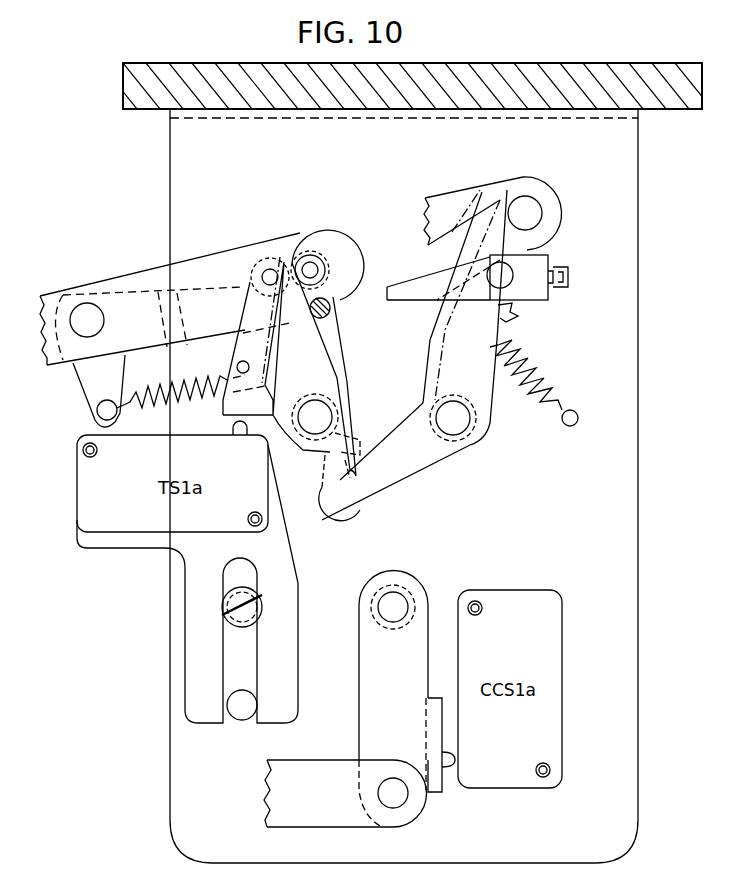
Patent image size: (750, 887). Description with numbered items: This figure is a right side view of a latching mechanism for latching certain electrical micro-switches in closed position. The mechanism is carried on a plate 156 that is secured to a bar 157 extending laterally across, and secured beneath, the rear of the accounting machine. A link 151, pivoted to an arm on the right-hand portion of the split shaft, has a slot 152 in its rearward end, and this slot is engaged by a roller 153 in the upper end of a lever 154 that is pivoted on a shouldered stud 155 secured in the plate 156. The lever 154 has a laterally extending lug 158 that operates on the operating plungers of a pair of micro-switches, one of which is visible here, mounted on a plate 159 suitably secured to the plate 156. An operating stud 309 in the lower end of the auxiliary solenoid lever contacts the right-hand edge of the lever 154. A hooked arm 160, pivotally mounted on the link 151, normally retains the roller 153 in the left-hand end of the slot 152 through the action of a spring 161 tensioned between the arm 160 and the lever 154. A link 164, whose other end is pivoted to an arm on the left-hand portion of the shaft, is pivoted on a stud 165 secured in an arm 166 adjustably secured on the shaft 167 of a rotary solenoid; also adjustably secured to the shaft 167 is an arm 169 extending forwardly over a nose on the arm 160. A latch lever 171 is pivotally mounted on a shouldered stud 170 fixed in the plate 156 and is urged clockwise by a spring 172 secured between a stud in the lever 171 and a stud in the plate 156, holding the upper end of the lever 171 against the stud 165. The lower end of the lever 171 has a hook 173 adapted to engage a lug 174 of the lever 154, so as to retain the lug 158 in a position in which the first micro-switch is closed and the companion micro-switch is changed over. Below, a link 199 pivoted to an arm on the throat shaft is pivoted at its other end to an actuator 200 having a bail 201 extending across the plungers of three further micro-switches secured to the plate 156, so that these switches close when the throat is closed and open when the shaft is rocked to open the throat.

The link 151 is at (210, 268).
The slot 152 is at (298, 255).
The roller 153 is at (272, 236).
The lever 154 is at (342, 380).
The shouldered stud 155 is at (332, 417).
The plate 156 is at (638, 578).
The bar 157 is at (509, 73).
The laterally extending lug 158 is at (245, 380).
The plate 159 is at (298, 569).
The hooked arm 160 is at (345, 300).
The spring 161 is at (160, 392).
The link 164 is at (447, 206).
The stud 165 is at (530, 212).
The arm 166 is at (514, 313).
The shaft 167 is at (525, 262).
The arm 169 is at (550, 292).
The shouldered stud 170 is at (458, 418).
The latch lever 171 is at (440, 455).
The spring 172 is at (540, 388).
The hook 173 is at (334, 480).
The lug 174 is at (355, 430).
The link 199 is at (310, 812).
The actuator 200 is at (362, 722).
The bail 201 is at (438, 728).
The operating stud 309 is at (330, 310).